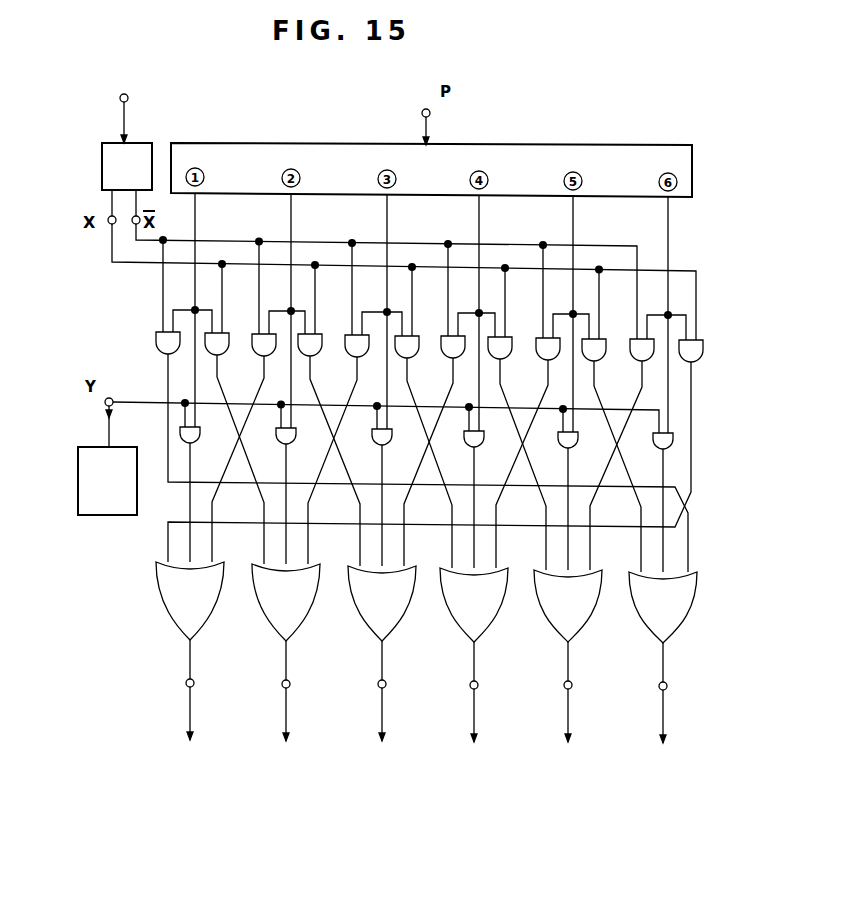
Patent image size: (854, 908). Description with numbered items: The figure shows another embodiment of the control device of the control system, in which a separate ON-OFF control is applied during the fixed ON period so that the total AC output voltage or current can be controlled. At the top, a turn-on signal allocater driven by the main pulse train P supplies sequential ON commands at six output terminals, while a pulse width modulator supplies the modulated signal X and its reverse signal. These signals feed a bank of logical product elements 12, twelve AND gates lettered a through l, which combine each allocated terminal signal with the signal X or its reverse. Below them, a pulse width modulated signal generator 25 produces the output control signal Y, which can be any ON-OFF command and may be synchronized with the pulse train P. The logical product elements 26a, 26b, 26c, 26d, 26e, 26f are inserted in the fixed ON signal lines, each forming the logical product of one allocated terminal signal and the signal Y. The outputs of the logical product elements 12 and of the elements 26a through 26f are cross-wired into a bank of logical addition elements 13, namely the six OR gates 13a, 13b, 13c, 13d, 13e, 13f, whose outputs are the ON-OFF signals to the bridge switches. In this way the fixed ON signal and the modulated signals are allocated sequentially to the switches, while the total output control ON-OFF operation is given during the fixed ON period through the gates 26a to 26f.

The logical product elements 12 is at (138, 349).
The logical addition element 13 is at (143, 654).
The logical addition element 13a is at (216, 614).
The logical addition element 13b is at (312, 615).
The logical addition element 13c is at (408, 615).
The logical addition element 13d is at (500, 616).
The logical addition element 13e is at (594, 616).
The logical addition element 13f is at (689, 617).
The pulse width modulated signal generator 25 is at (98, 515).
The logical product element 26a is at (198, 438).
The logical product element 26b is at (294, 442).
The logical product element 26c is at (390, 441).
The logical product element 26d is at (482, 443).
The logical product element 26e is at (576, 444).
The logical product element 26f is at (655, 444).